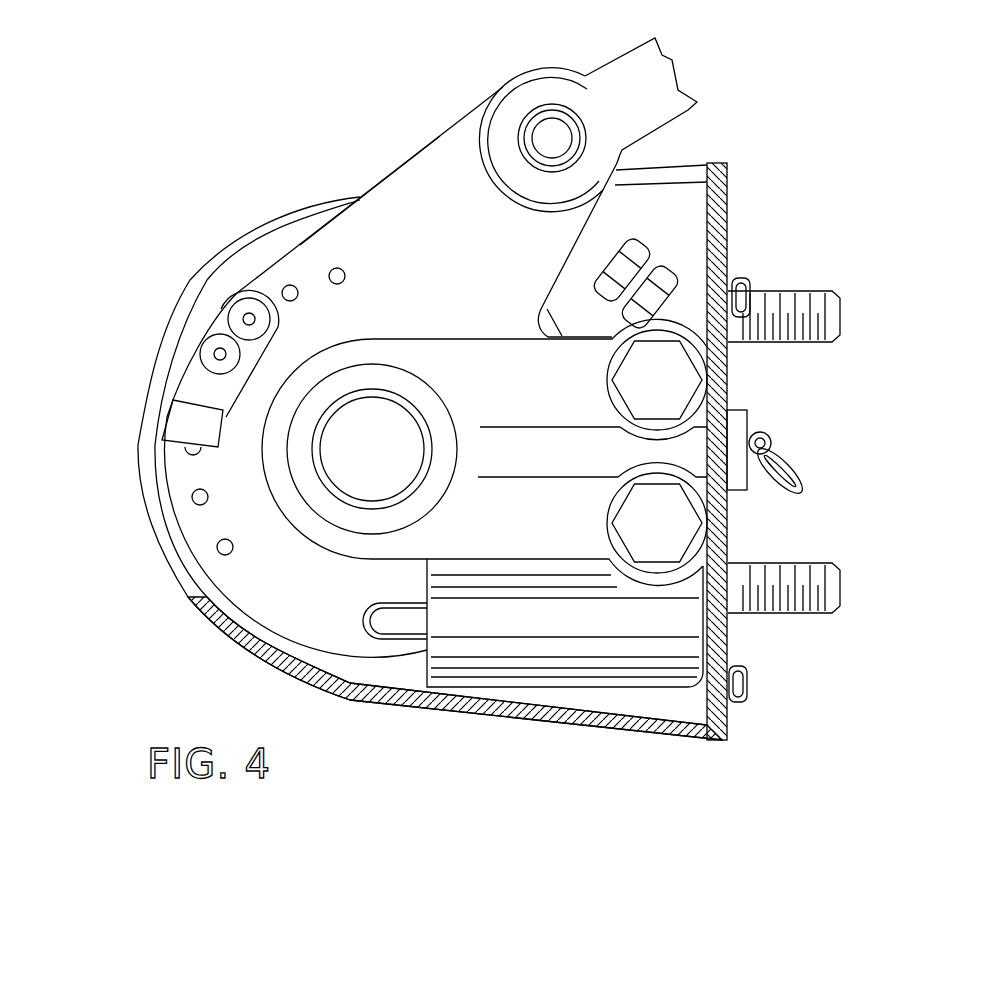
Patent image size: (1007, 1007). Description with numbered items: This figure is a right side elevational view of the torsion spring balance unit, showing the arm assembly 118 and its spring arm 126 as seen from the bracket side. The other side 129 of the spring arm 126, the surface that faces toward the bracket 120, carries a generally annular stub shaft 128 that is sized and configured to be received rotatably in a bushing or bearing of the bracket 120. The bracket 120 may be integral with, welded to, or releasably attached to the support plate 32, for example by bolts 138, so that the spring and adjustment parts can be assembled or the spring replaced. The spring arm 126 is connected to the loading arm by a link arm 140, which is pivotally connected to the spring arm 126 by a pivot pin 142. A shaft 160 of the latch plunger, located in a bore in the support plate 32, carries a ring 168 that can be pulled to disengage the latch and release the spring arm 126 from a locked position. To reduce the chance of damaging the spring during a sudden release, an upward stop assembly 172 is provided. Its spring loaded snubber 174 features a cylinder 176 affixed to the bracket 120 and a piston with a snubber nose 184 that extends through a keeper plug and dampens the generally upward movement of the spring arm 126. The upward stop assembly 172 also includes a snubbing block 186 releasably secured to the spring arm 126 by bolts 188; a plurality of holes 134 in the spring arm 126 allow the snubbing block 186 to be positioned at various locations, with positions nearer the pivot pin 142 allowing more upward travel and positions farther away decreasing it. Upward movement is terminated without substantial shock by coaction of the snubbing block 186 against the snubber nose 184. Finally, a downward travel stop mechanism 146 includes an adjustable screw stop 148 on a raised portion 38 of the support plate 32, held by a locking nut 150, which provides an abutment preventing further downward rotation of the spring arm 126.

The arm assembly 118 is at (193, 193).
The bracket 120 is at (540, 537).
The spring arm 126 is at (418, 151).
The stub shaft 128 is at (398, 459).
The other side 129 is at (407, 213).
The holes 134 is at (346, 275).
The bolts 138 is at (633, 377).
The link arm 140 is at (600, 88).
The pivot pin 142 is at (548, 132).
The downward travel stop mechanism 146 is at (670, 200).
The screw stop 148 is at (653, 242).
The locking nut 150 is at (670, 267).
The shaft 160 is at (738, 420).
The ring 168 is at (797, 472).
The upward stop assembly 172 is at (508, 815).
The spring loaded snubber 174 is at (442, 718).
The cylinder 176 is at (538, 668).
The snubber nose 184 is at (373, 622).
The snubbing block 186 is at (173, 414).
The bolts 188 is at (243, 311).
The support plate 32 is at (722, 742).
The raised portion 38 is at (692, 315).